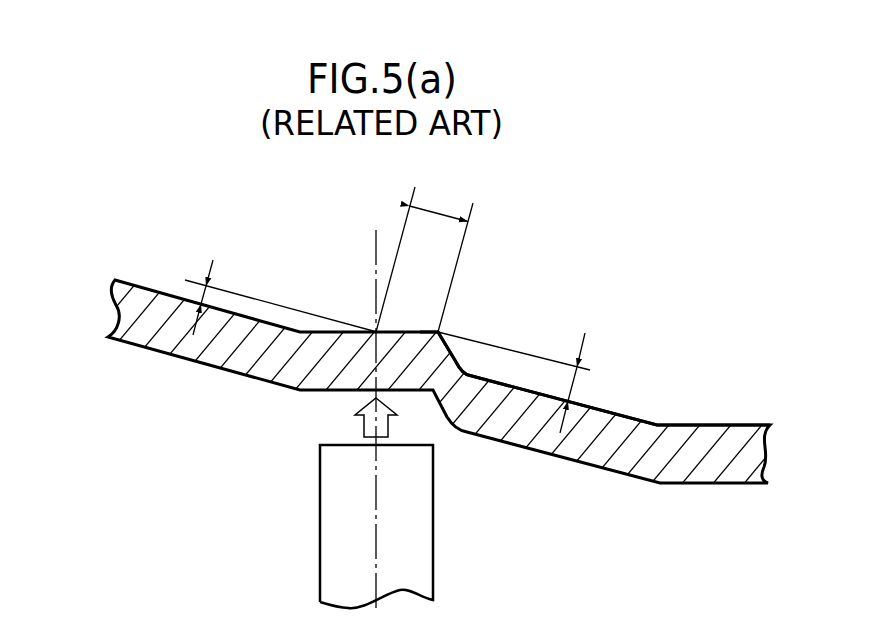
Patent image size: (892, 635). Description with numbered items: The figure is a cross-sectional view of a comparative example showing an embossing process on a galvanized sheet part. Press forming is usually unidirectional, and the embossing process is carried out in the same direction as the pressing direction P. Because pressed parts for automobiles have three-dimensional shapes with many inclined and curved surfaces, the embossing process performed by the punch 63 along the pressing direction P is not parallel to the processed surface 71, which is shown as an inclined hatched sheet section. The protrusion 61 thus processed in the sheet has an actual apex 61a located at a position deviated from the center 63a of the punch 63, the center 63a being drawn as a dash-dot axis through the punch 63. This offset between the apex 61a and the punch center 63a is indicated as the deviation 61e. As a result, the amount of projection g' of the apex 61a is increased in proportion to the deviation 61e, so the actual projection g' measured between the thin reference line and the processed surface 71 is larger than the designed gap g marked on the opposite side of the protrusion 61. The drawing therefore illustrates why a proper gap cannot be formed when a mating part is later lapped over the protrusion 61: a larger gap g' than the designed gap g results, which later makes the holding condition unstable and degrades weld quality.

The protrusion 61 is at (402, 331).
The actual apex 61a is at (440, 331).
The deviation 61e is at (424, 250).
The punch 63 is at (320, 530).
The center of punch 63a is at (373, 403).
The processed surface 71 is at (613, 413).
The pressing direction P is at (363, 422).
The designed gap g is at (281, 276).
The amount of projection g' is at (520, 360).